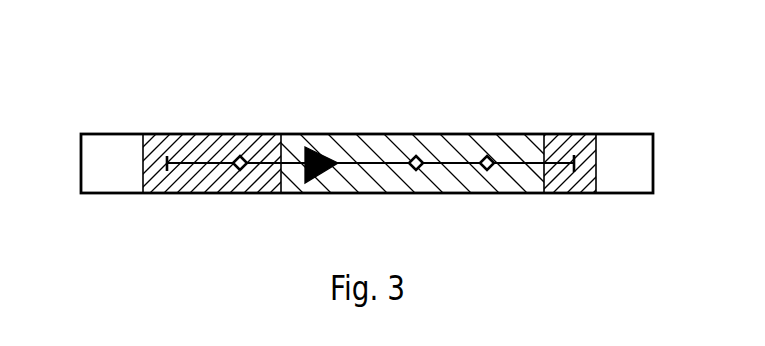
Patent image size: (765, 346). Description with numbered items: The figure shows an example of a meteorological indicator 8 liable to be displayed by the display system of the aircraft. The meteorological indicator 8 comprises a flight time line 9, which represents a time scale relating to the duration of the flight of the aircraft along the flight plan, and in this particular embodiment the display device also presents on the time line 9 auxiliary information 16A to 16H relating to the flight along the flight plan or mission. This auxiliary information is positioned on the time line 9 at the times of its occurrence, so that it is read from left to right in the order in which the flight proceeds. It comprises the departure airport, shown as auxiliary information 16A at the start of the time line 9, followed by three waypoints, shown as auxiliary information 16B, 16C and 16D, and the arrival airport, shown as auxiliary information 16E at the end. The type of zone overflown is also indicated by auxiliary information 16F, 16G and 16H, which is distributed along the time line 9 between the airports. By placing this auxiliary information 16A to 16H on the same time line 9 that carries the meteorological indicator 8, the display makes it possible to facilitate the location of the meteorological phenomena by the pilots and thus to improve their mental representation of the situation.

The meteorological indicator 8 is at (381, 168).
The time line 9 is at (372, 163).
The auxiliary information 16A is at (117, 134).
The auxiliary information 16B is at (242, 134).
The auxiliary information 16C is at (416, 135).
The auxiliary information 16D is at (493, 135).
The auxiliary information 16E is at (627, 135).
The type of zone overflown 16F is at (226, 181).
The type of zone overflown 16G is at (343, 149).
The type of zone overflown 16H is at (572, 135).